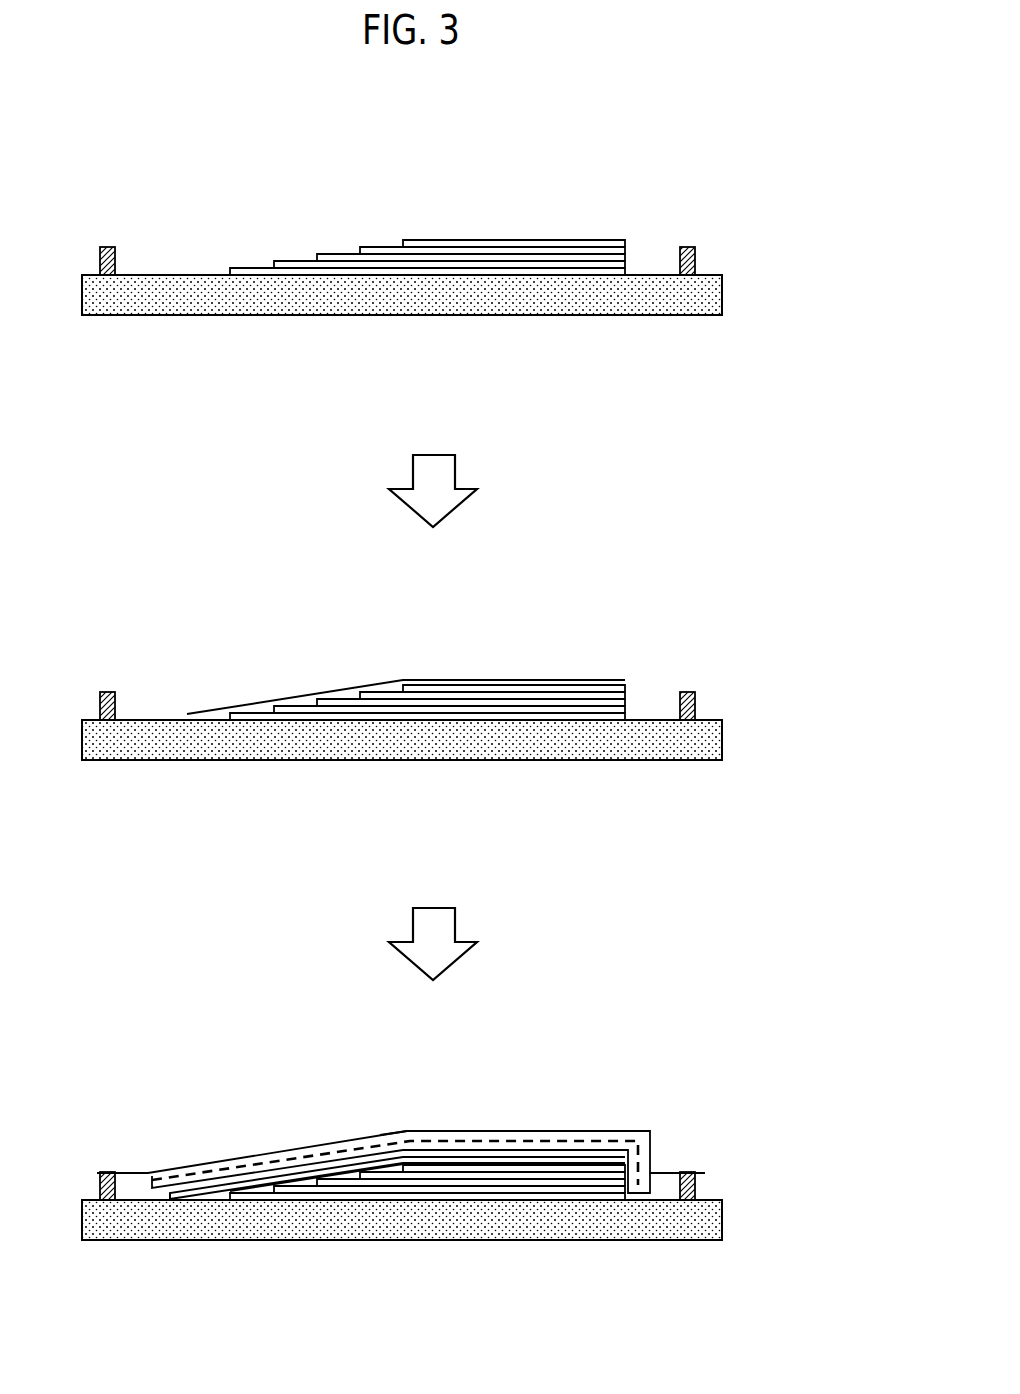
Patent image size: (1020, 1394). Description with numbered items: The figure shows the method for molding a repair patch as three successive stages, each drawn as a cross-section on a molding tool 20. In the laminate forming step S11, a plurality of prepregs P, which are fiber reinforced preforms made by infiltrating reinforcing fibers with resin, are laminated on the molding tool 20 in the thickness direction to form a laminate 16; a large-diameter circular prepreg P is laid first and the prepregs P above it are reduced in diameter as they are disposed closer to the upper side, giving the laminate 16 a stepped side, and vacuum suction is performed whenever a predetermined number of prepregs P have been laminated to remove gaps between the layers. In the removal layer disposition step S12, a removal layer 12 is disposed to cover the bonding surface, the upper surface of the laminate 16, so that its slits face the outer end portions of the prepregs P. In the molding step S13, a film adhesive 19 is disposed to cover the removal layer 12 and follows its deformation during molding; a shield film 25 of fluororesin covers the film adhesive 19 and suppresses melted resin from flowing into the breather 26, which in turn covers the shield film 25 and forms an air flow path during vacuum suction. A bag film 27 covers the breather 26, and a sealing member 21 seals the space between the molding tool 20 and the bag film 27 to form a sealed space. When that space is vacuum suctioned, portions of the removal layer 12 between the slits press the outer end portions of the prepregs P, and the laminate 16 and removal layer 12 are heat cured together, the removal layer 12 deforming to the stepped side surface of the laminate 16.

The laminate forming step S11 is at (675, 124).
The removal layer disposition step S12 is at (675, 576).
The molding step S13 is at (675, 1051).
The prepreg P is at (340, 250).
The laminate 16 is at (608, 226).
The sealing member 21 is at (697, 252).
The molding tool 20 is at (722, 292).
The removal layer 12 is at (625, 680).
The film adhesive 19 is at (272, 1192).
The bag film 27 is at (394, 1131).
The breather 26 is at (483, 1141).
The shield film 25 is at (566, 1131).